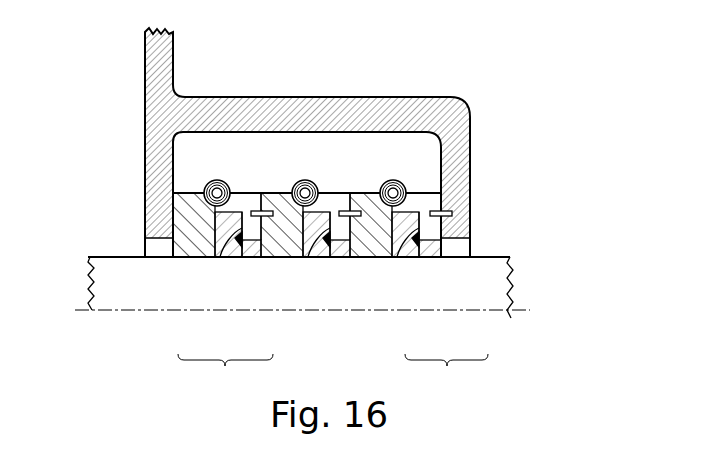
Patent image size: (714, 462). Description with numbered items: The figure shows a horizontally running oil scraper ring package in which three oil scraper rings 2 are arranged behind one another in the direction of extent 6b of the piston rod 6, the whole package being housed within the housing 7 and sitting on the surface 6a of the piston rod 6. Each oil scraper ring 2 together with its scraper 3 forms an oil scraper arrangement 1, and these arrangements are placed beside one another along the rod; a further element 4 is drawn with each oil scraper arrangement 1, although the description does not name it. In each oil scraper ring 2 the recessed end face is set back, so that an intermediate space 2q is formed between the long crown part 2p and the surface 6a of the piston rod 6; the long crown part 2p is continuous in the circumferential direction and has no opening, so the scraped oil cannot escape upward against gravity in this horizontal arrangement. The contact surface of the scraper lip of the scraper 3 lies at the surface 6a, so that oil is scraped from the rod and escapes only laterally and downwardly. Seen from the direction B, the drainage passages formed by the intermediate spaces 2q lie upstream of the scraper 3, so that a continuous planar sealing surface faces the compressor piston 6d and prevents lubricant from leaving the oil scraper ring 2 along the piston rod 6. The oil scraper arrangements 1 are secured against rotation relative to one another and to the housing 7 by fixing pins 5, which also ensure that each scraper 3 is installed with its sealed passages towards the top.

The oil scraper arrangement 1 is at (357, 78).
The oil scraper ring 2 is at (193, 257).
The long crown part 2p is at (248, 210).
The intermediate space 2q is at (258, 257).
The scraper 3 is at (221, 257).
The ball 4 is at (217, 183).
The fixing pin 5 is at (262, 211).
The piston rod 6 is at (497, 279).
The surface of the piston rod 6a is at (107, 250).
The direction of extent 6b is at (505, 312).
The compressor piston 6d is at (65, 216).
The housing 7 is at (370, 105).
The direction B is at (555, 206).